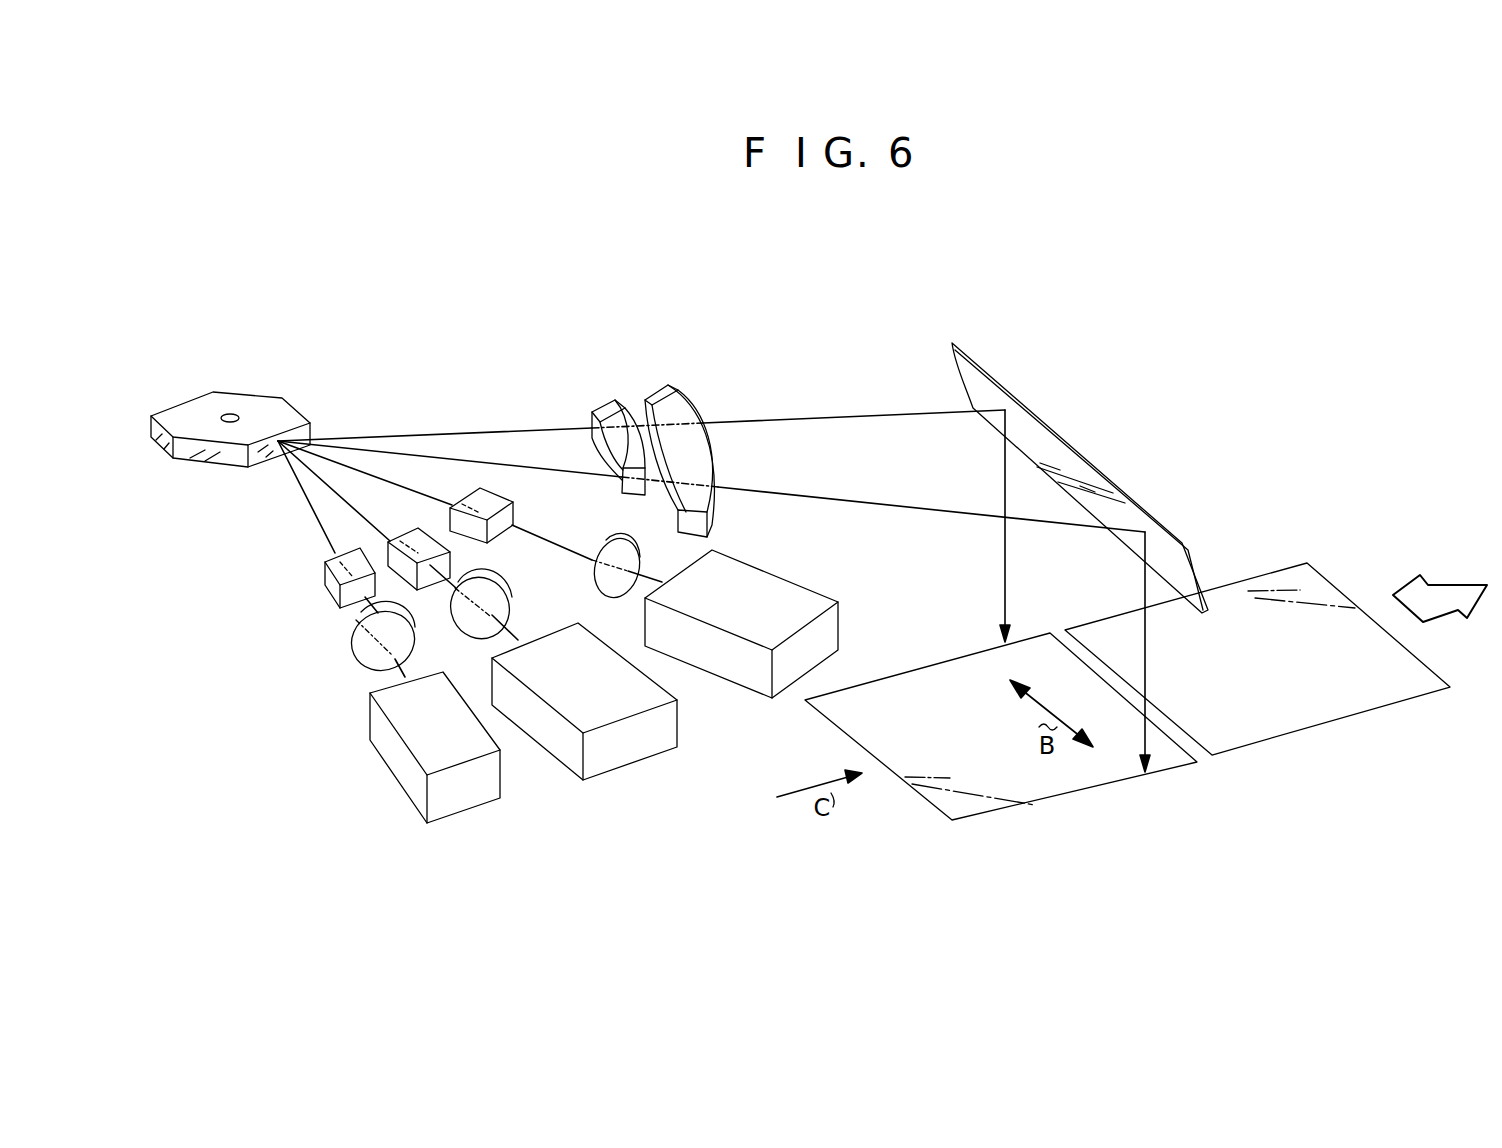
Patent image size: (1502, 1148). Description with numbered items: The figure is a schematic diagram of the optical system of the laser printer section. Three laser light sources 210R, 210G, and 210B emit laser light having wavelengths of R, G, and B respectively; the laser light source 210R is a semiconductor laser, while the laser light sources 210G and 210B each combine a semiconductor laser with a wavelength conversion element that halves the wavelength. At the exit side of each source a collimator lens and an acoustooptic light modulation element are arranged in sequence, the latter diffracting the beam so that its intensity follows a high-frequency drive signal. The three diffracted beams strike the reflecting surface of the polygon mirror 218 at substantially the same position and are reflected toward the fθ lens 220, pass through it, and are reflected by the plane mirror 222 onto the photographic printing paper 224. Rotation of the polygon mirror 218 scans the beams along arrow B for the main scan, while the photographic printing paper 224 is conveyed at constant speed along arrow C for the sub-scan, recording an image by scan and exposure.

The polygon mirror 218 is at (259, 393).
The fθ lens 220 is at (603, 402).
The plane mirror 222 is at (995, 373).
The photographic printing paper 224 is at (1237, 753).
The laser light source 210R is at (462, 813).
The laser light source 210G is at (620, 767).
The laser light source 210B is at (842, 618).